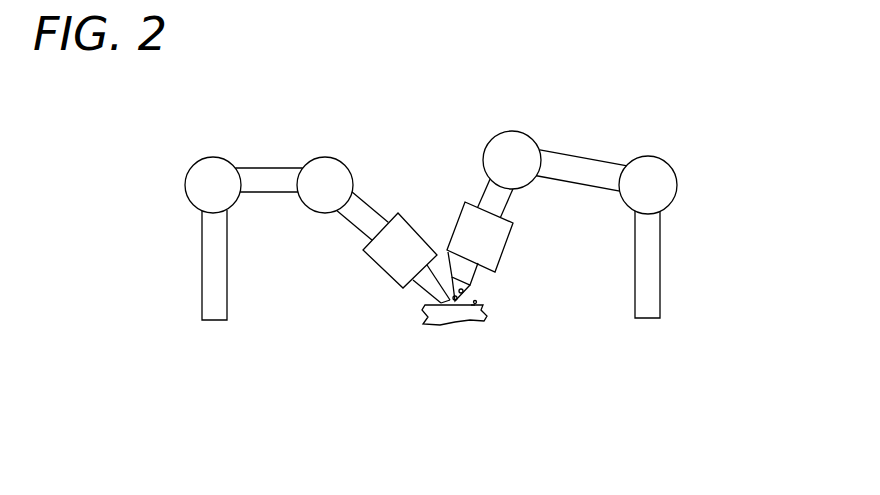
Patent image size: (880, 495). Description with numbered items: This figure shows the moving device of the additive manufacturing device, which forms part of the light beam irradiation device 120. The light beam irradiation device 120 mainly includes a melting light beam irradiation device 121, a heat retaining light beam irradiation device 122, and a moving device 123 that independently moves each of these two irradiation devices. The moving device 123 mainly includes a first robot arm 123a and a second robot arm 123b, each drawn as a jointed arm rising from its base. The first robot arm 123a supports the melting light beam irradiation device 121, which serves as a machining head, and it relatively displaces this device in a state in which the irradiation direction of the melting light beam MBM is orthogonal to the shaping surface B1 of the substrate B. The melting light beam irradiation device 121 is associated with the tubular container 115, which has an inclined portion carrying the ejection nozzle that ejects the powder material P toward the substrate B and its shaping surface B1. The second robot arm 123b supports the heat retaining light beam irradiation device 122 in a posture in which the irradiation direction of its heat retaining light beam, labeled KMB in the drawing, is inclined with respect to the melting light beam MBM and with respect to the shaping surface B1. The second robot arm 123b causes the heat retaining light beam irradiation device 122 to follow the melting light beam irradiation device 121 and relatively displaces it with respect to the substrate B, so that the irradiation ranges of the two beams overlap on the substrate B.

The light beam irradiation device 120 is at (465, 220).
The moving device 123 is at (427, 199).
The first robot arm 123a is at (592, 160).
The second robot arm 123b is at (272, 168).
The heat retaining light beam irradiation device 122 is at (378, 266).
The melting light beam irradiation device 121 is at (536, 251).
The container 115 is at (500, 258).
The processing head KMB is at (430, 294).
The melting light beam MBM is at (468, 287).
The substrate B is at (436, 326).
The shaping surface B1 is at (473, 305).
The powder material P is at (476, 300).